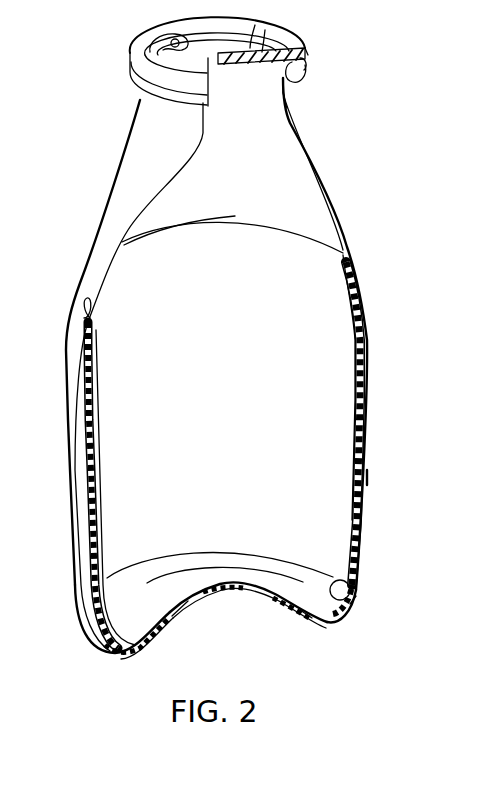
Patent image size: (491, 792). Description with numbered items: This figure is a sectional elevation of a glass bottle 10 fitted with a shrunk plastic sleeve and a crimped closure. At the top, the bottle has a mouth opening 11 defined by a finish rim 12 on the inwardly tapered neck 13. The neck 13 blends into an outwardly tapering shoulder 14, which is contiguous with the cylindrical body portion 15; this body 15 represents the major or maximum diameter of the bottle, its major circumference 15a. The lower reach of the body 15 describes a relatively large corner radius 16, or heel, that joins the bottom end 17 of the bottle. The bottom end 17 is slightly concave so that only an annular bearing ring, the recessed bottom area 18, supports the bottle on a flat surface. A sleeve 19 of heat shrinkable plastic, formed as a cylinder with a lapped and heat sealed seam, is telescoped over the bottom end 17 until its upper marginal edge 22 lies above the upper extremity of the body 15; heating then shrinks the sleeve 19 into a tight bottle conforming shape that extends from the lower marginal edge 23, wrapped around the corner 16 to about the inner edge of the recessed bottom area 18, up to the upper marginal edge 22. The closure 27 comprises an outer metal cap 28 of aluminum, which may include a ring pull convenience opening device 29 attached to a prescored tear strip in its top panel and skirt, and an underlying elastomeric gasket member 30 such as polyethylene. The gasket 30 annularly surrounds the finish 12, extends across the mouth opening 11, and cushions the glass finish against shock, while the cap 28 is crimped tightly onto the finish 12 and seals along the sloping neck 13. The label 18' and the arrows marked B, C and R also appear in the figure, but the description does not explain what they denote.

The glass bottle 10 is at (234, 216).
The mouth opening 11 is at (217, 38).
The finish rim 12 is at (288, 70).
The neck 13 is at (288, 90).
The shoulder 14 is at (334, 182).
The cylindrical body portion 15 is at (355, 381).
The major circumference 15a is at (84, 318).
The corner radius 16 is at (349, 588).
The bottom end 17 is at (237, 588).
The recessed bottom area 18 is at (124, 622).
The dome side portion 18' is at (204, 615).
The sleeve 19 is at (366, 428).
The upper marginal edge 22 is at (67, 348).
The lower marginal edge 23 is at (188, 612).
The closure 27 is at (337, 30).
The outer metal cap 28 is at (312, 47).
The ring pull convenience opening device 29 is at (256, 26).
The gasket member 30 is at (306, 60).
The bottom direction B is at (372, 477).
The corner C is at (357, 608).
The radius R is at (318, 634).